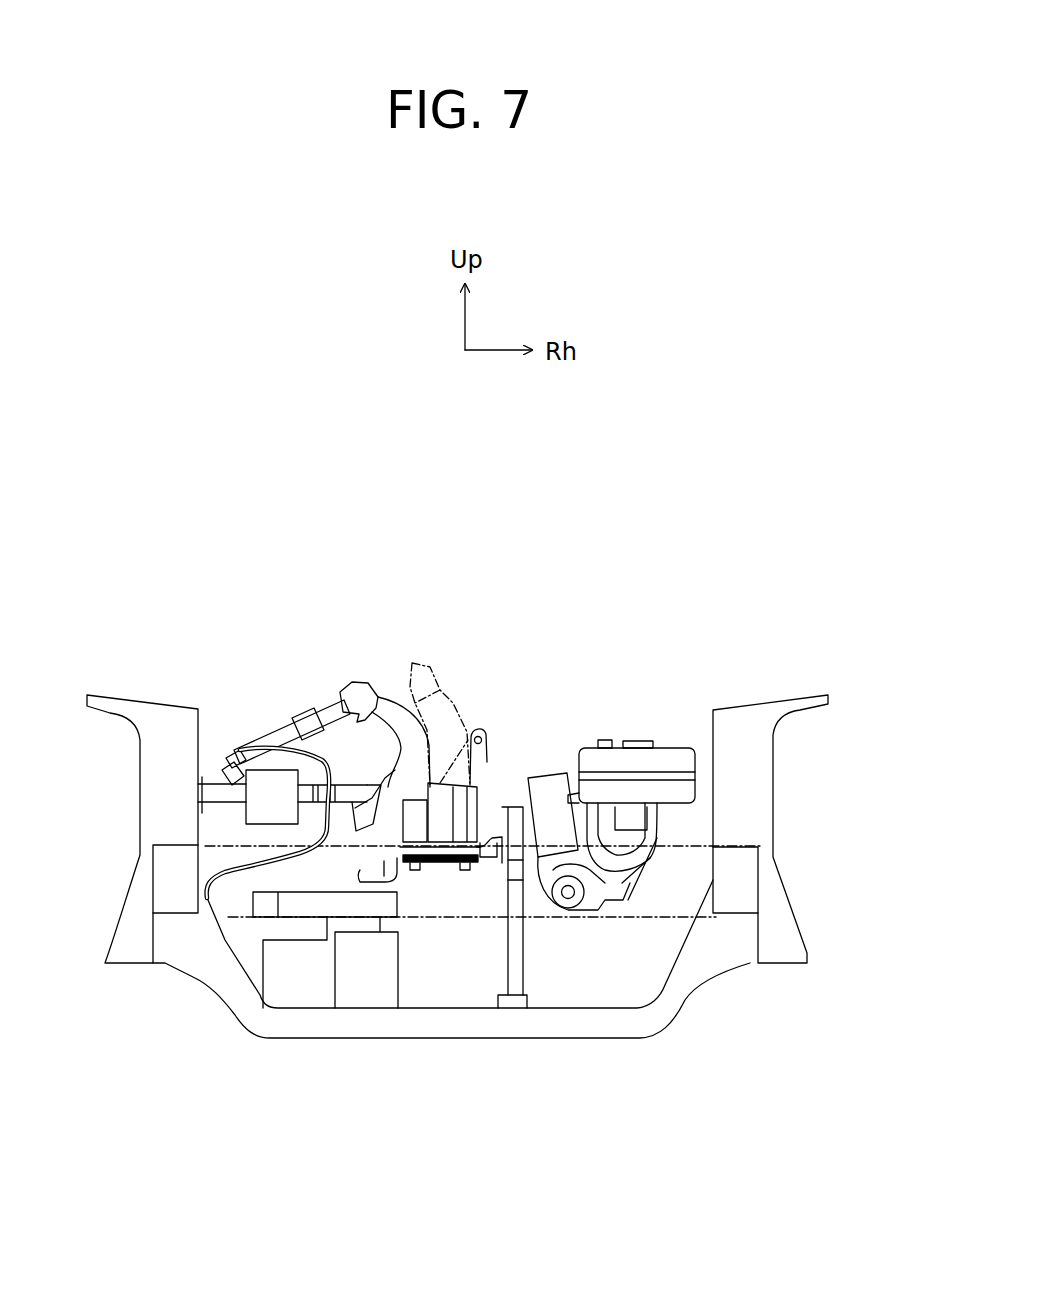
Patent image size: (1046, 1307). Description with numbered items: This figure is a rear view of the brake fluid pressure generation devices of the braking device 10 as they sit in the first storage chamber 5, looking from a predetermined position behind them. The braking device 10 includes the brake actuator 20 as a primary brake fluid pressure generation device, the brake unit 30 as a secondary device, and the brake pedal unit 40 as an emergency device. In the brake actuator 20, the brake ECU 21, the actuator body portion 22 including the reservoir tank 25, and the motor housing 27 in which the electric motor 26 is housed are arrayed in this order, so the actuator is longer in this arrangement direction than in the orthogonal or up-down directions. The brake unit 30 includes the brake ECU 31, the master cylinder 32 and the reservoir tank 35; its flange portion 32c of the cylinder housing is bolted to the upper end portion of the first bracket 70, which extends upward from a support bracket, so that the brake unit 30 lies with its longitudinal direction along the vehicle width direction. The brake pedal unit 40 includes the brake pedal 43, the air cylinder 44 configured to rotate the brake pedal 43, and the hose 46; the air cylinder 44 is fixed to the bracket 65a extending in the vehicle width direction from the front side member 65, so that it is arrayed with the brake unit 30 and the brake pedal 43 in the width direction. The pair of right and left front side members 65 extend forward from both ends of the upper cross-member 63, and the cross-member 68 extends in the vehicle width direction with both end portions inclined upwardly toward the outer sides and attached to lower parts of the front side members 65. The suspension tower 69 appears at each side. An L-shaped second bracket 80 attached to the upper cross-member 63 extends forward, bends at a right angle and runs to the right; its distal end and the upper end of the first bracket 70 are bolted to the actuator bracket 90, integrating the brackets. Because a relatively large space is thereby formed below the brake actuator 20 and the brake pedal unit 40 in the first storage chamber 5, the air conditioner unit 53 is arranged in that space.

The braking device 10 is at (665, 532).
The brake pedal unit 40 is at (418, 670).
The brake actuator 20 is at (481, 820).
The brake unit 30 is at (620, 750).
The first storage chamber 5 is at (427, 690).
The brake pedal 43 is at (432, 668).
The brake ECU 21 is at (489, 726).
The brake ECU 31 is at (580, 770).
The flange portion 32c is at (556, 775).
The reservoir tank 35 is at (675, 749).
The master cylinder 32 is at (616, 893).
The first bracket 70 is at (524, 965).
The suspension tower 69 is at (125, 694).
The bracket 65a is at (213, 780).
The air cylinder 44 is at (283, 753).
The hose 46 is at (222, 841).
The front side member 65 is at (168, 874).
The upper cross-member 63 is at (293, 902).
The second bracket 80 is at (293, 965).
The air conditioner unit 53 is at (297, 903).
The motor housing 27 is at (333, 957).
The electric motor 26 is at (295, 962).
The actuator bracket 90 is at (417, 872).
The cross-member 68 is at (470, 1026).
The actuator body portion 22 is at (495, 941).
The reservoir tank 25 is at (441, 830).